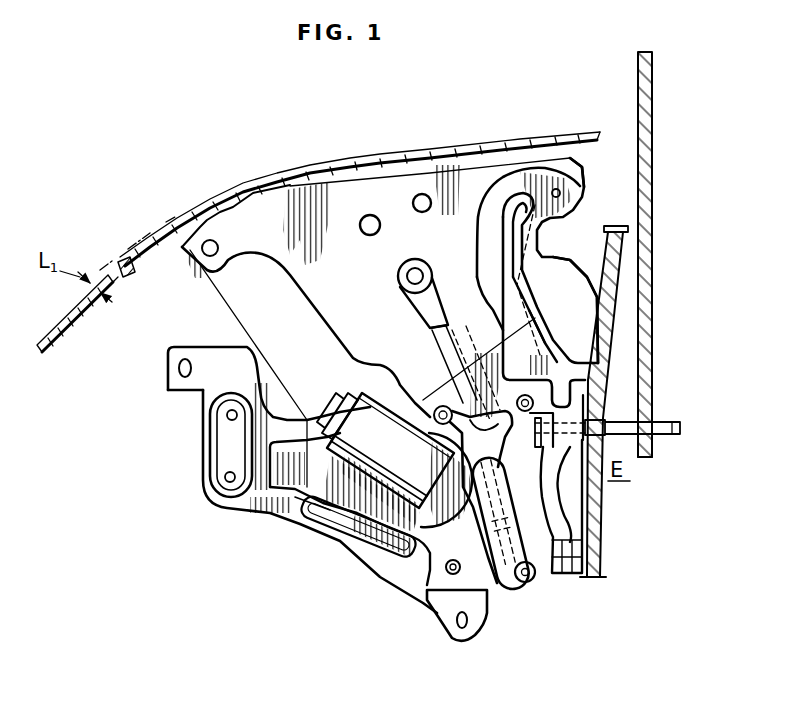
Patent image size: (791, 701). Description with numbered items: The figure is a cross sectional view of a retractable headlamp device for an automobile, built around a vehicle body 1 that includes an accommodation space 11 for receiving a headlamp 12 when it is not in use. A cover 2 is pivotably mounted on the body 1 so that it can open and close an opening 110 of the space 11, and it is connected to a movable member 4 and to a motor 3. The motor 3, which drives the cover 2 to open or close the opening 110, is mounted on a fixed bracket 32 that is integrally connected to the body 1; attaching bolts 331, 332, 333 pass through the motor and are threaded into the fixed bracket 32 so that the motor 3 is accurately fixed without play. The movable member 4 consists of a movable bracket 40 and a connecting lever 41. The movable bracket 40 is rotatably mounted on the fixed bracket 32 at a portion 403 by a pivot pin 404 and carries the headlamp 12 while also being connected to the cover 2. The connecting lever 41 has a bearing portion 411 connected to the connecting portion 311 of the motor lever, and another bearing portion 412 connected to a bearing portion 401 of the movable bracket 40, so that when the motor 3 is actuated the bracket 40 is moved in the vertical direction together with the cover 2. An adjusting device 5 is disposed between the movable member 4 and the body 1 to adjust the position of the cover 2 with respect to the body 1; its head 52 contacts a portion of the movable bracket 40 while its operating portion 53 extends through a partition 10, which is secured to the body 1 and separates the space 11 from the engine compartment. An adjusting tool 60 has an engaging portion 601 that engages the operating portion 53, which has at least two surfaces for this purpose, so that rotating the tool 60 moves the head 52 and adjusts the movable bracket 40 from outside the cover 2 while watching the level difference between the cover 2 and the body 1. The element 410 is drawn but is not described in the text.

The vehicle body 1 is at (50, 330).
The cover 2 is at (170, 220).
The accommodation space 11 is at (126, 283).
The opening 110 is at (113, 291).
The headlamp 12 is at (226, 303).
The movable member 4 is at (290, 287).
The movable bracket 40 is at (451, 162).
The bearing portion 401 is at (397, 268).
The bearing portion 412 is at (407, 296).
The connecting lever 41 is at (466, 357).
The portion 403 is at (577, 170).
The pivot pin 404 is at (561, 194).
The head 52 is at (512, 375).
The attaching bolt 333 is at (548, 372).
The fixed bracket 32 is at (588, 303).
The attaching bolt 332 is at (422, 390).
The adjusting tool 60 is at (637, 70).
The engaging portion 601 is at (643, 460).
The adjusting device 5 is at (675, 412).
The operating portion 53 is at (668, 440).
The partition 10 is at (604, 575).
The motor 3 is at (310, 498).
The bracket channel 410 is at (367, 530).
The attaching bolt 331 is at (428, 585).
The bearing portion 411 is at (541, 585).
The connecting portion 311 is at (526, 583).